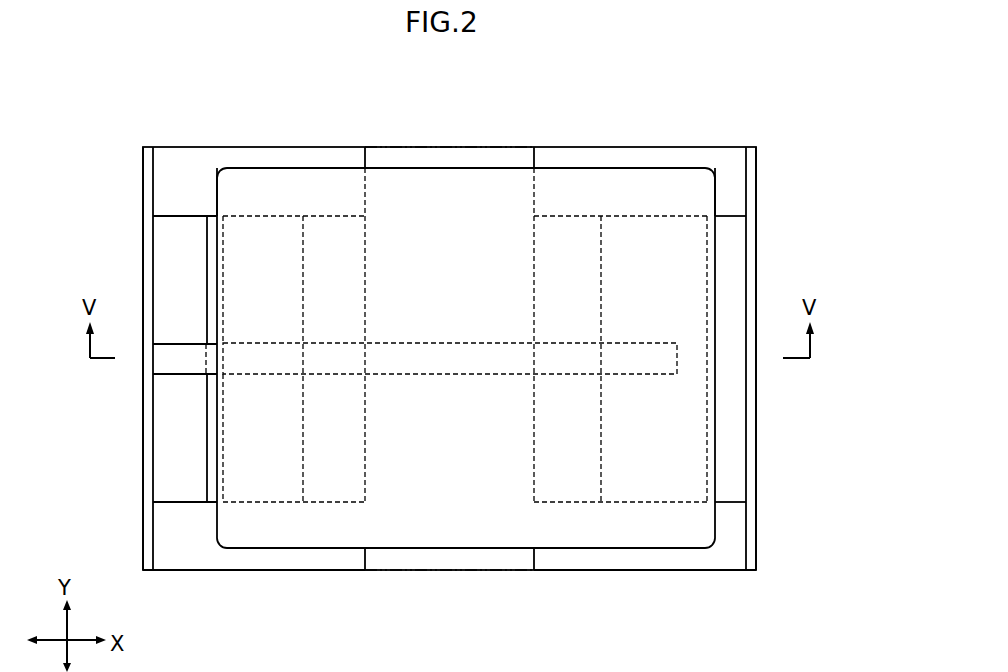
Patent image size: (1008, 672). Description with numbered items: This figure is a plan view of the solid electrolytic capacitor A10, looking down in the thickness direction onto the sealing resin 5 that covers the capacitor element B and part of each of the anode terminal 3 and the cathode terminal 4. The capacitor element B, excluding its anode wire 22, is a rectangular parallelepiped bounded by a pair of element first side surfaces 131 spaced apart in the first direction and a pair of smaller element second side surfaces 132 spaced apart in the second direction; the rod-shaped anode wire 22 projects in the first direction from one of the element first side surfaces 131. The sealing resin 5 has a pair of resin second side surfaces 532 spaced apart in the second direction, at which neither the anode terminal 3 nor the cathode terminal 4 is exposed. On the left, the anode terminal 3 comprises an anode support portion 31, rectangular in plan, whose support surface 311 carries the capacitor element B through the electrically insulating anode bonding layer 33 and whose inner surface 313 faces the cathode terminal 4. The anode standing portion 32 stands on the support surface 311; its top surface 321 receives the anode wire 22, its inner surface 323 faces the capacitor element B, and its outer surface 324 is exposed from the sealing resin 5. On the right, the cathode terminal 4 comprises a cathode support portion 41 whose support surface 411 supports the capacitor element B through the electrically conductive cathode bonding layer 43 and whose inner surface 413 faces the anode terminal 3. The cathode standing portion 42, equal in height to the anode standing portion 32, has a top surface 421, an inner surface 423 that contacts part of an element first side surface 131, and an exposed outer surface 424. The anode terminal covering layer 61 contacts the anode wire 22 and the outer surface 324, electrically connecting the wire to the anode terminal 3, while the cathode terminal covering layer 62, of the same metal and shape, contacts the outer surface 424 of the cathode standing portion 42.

The solid electrolytic capacitor A10 is at (184, 135).
The capacitor element B is at (323, 161).
The sealing resin 5 is at (412, 143).
The resin second side surfaces 532 is at (487, 147).
The element second side surfaces 132 is at (602, 168).
The element first side surfaces 131 is at (217, 197).
The anode wire 22 is at (186, 355).
The anode terminal 3 is at (207, 406).
The anode support portion 31 is at (310, 416).
The support surface 311 is at (335, 448).
The inner surface 313 is at (365, 448).
The anode standing portion 32 is at (120, 358).
The top surface 321 is at (183, 400).
The inner surface 323 is at (208, 433).
The outer surface 324 is at (85, 392).
The anode bonding layer 33 is at (262, 455).
The cathode terminal 4 is at (693, 406).
The cathode support portion 41 is at (603, 416).
The support surface 411 is at (559, 454).
The inner surface 413 is at (534, 454).
The cathode standing portion 42 is at (793, 358).
The top surface 421 is at (728, 401).
The inner surface 423 is at (710, 433).
The outer surface 424 is at (746, 453).
The cathode bonding layer 43 is at (663, 454).
The anode terminal covering layer 61 is at (190, 530).
The cathode terminal covering layer 62 is at (730, 530).